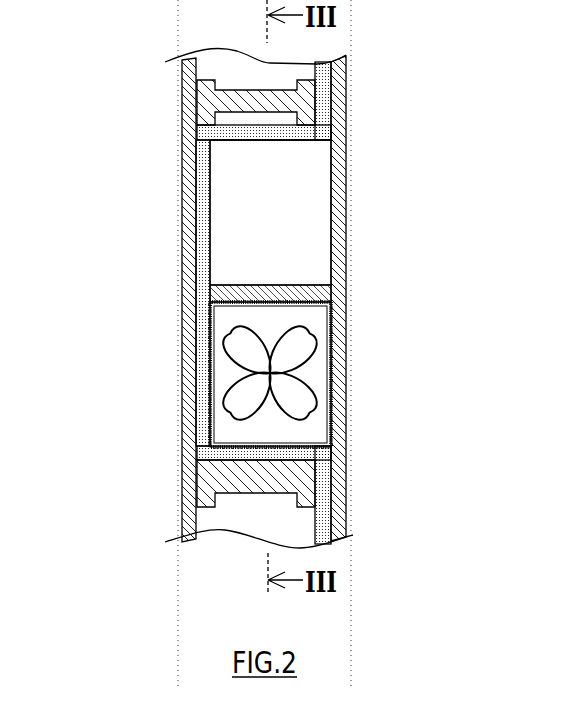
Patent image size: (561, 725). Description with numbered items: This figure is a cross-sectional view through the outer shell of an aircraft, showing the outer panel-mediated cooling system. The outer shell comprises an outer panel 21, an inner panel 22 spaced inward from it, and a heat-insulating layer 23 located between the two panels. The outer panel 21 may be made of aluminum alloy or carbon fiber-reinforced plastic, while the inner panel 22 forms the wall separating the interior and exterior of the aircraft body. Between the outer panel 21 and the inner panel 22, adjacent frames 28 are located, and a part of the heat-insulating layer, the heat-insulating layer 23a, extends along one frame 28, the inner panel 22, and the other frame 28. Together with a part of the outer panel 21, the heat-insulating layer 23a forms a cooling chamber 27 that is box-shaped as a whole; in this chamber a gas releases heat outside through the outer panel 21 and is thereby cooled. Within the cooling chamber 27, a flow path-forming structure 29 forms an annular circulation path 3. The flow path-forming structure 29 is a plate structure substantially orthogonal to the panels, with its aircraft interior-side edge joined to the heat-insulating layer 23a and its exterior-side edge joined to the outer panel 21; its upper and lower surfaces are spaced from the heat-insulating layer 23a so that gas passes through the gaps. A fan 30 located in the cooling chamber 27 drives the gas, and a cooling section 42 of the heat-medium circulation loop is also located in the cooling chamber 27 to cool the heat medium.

The annular circulation path 3 is at (314, 246).
The outer panel 21 is at (346, 205).
The inner panel 22 is at (182, 195).
The heat-insulating layer 23 is at (327, 97).
The heat-insulating layer 23a is at (292, 141).
The cooling chamber 27 is at (278, 226).
The frames 28 is at (302, 90).
The flow path-forming structure 29 is at (297, 285).
The fan 30 is at (316, 353).
The cooling section 42 is at (310, 430).